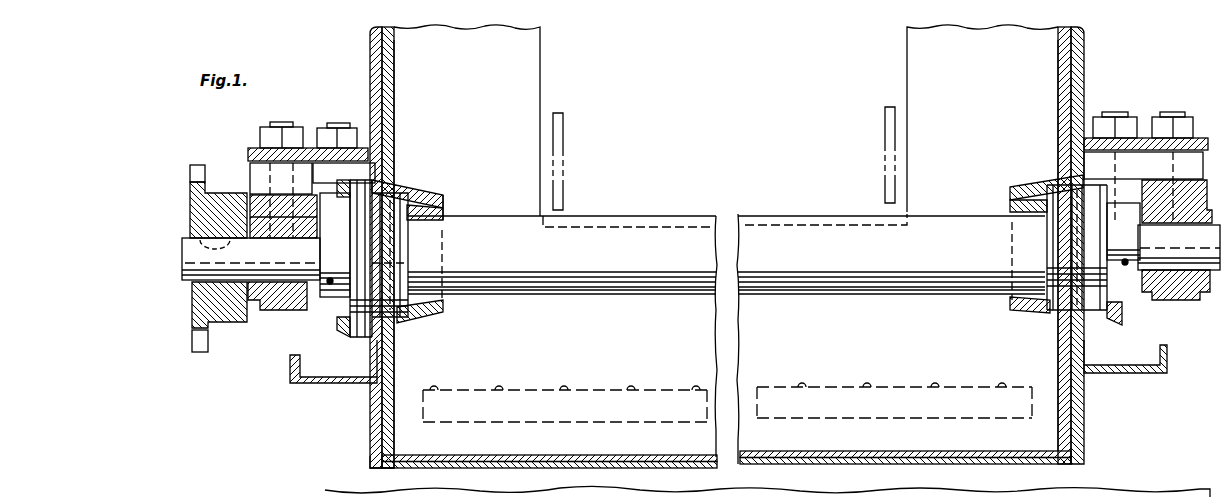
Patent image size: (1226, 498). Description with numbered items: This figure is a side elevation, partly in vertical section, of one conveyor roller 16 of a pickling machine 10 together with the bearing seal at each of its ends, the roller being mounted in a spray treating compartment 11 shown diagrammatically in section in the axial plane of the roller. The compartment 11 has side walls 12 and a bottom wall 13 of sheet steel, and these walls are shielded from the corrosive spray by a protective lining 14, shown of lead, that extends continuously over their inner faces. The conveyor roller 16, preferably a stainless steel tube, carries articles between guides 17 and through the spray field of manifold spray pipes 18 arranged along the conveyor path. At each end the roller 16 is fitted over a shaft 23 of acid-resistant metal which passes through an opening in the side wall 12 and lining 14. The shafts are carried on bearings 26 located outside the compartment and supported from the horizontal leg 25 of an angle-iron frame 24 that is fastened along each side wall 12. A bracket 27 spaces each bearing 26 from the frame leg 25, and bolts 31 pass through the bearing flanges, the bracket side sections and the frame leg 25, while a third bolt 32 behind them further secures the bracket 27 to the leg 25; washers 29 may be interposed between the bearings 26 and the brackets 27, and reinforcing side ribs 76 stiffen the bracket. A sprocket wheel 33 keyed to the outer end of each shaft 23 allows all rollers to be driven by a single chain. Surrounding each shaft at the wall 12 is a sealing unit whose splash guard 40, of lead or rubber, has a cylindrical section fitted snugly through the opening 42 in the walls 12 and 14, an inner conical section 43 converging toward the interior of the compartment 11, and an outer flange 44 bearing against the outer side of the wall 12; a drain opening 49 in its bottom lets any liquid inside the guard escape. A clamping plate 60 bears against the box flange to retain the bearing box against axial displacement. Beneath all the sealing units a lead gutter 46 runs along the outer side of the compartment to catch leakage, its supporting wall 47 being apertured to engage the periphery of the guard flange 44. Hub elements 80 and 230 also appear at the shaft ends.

The pickling machine 10 is at (337, 398).
The compartment 11 is at (393, 440).
The side wall 12 is at (380, 415).
The bottom wall 13 is at (692, 468).
The protective lining 14 is at (397, 108).
The conveyor roller 16 is at (578, 295).
The guide 17 is at (563, 131).
The manifold spray pipe 18 is at (555, 421).
The shaft 23 is at (190, 253).
The longitudinal frame 24 is at (366, 60).
The horizontal leg 25 is at (252, 149).
The bearing 26 is at (270, 311).
The bracket 27 is at (252, 173).
The washer 29 is at (252, 200).
The bolt 31 is at (283, 122).
The third bolt 32 is at (336, 123).
The sprocket wheel 33 is at (192, 346).
The splash guard 40 is at (430, 186).
The opening 42 is at (392, 182).
The conical section 43 is at (445, 201).
The flange 44 is at (356, 185).
The gutter 46 is at (292, 372).
The supporting wall 47 is at (376, 357).
The drain opening 49 is at (417, 323).
The clamping plate 60 is at (337, 323).
The reinforcing side rib 76 is at (337, 197).
The hub 80 is at (330, 264).
The right hub 230 is at (1158, 244).